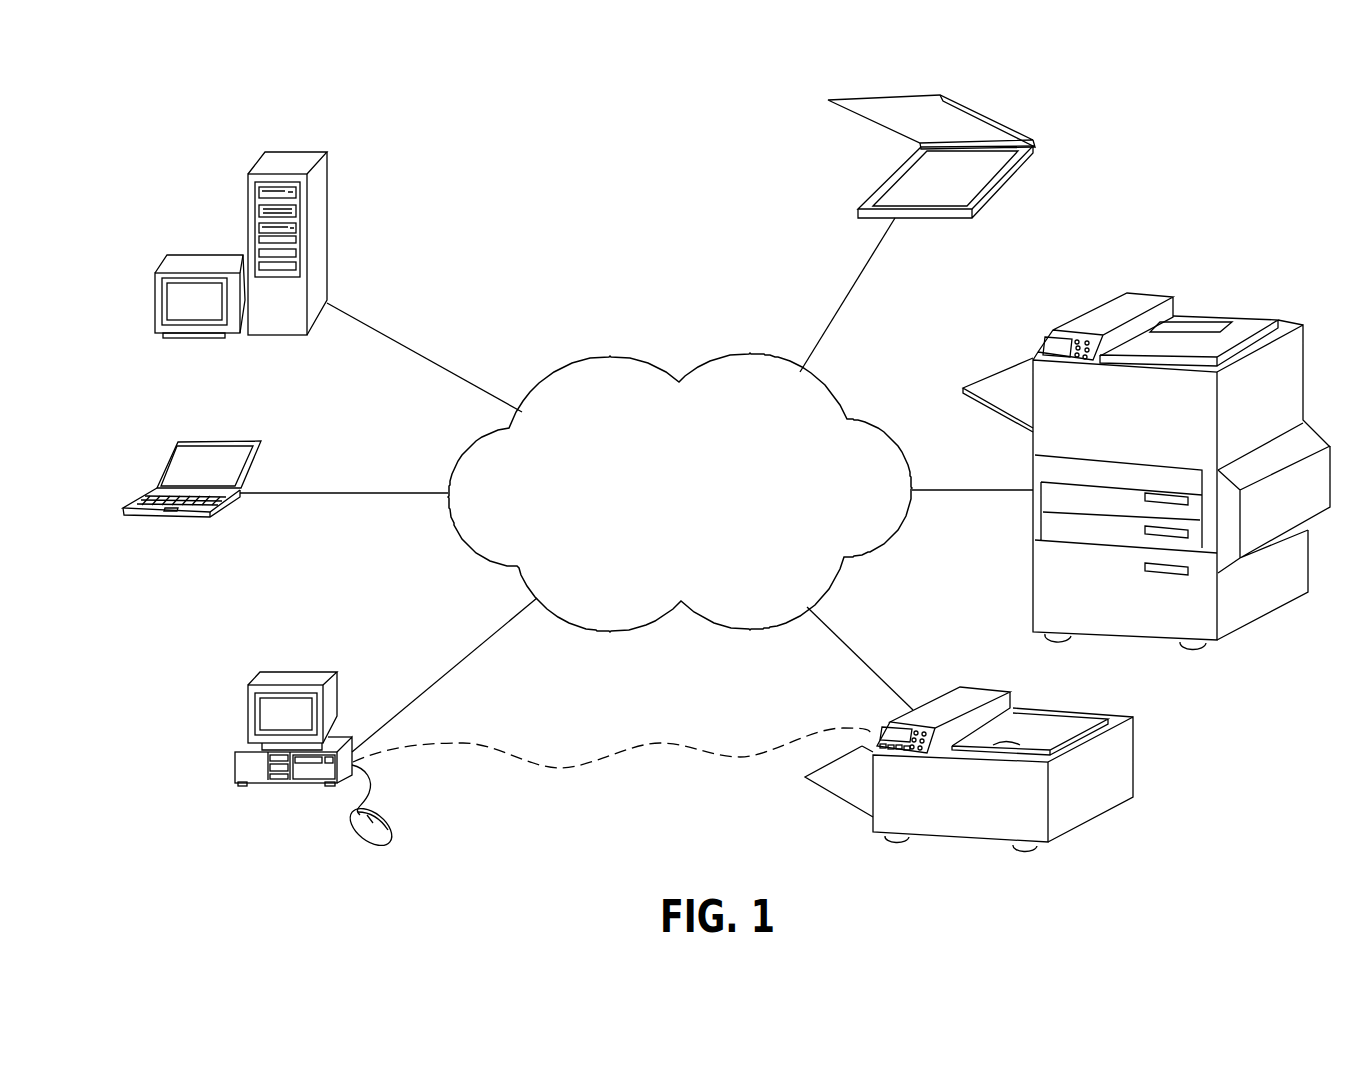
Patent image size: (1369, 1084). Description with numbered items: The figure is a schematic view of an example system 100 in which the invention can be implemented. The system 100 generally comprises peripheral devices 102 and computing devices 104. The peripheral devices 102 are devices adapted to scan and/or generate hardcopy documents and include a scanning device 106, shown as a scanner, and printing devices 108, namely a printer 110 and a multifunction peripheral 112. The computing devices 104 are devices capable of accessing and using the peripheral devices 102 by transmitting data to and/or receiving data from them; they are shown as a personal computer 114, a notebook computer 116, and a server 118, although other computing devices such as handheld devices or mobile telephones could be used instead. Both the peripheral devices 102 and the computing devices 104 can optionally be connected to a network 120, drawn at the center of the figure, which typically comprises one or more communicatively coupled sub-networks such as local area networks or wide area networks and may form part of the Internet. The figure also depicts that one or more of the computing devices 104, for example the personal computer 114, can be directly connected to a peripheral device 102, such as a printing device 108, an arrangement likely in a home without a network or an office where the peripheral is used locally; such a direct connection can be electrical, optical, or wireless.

The system 100 is at (1242, 130).
The peripheral devices 102 is at (823, 185).
The computing devices 104 is at (355, 158).
The scanning device 106 is at (987, 198).
The printing devices 108 is at (1047, 597).
The printer 110 is at (1252, 608).
The multifunction peripheral (MFP) 112 is at (1073, 815).
The personal computer (PC) 114 is at (238, 775).
The notebook computer 116 is at (123, 512).
The server 118 is at (318, 310).
The network 120 is at (660, 516).